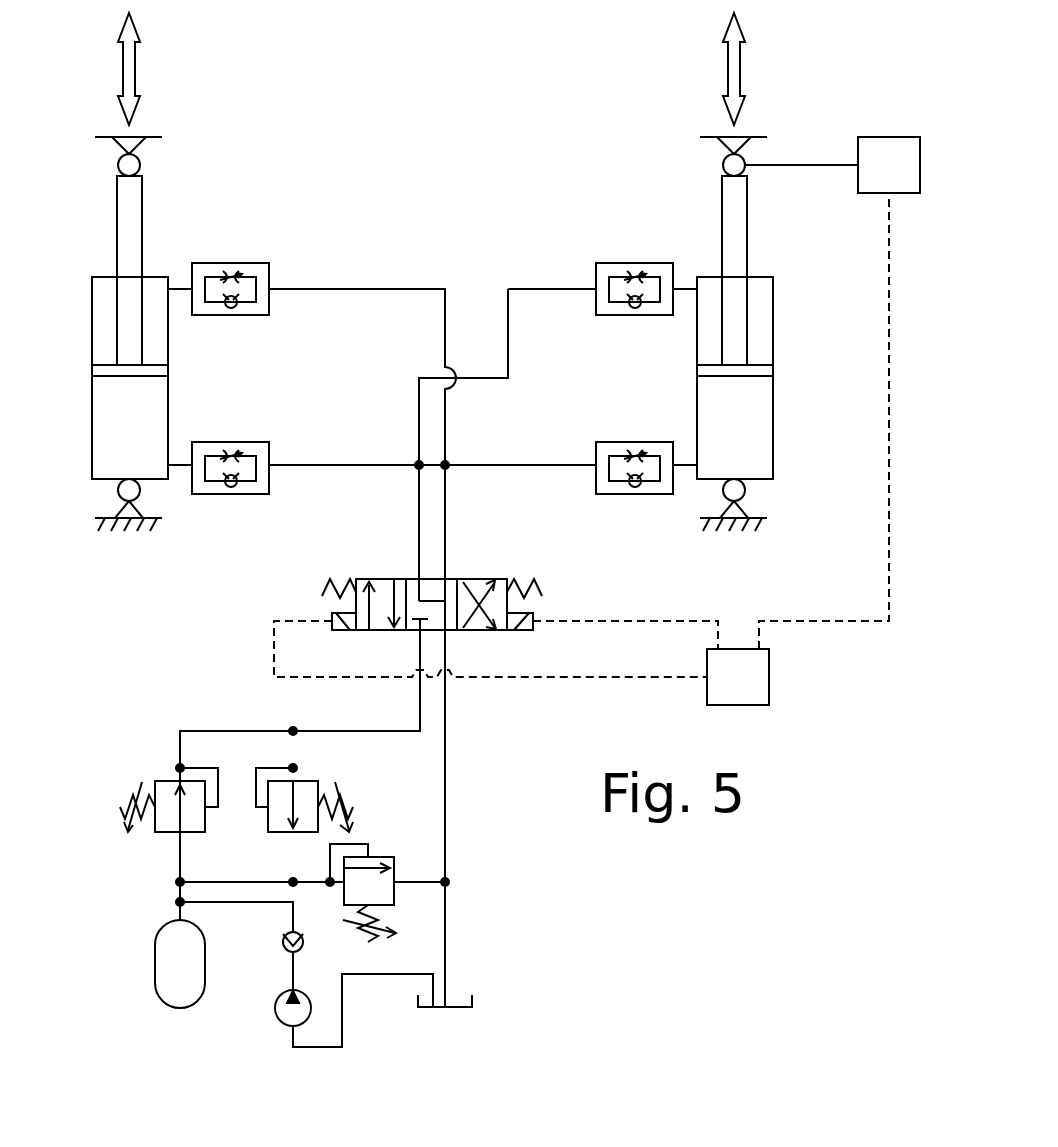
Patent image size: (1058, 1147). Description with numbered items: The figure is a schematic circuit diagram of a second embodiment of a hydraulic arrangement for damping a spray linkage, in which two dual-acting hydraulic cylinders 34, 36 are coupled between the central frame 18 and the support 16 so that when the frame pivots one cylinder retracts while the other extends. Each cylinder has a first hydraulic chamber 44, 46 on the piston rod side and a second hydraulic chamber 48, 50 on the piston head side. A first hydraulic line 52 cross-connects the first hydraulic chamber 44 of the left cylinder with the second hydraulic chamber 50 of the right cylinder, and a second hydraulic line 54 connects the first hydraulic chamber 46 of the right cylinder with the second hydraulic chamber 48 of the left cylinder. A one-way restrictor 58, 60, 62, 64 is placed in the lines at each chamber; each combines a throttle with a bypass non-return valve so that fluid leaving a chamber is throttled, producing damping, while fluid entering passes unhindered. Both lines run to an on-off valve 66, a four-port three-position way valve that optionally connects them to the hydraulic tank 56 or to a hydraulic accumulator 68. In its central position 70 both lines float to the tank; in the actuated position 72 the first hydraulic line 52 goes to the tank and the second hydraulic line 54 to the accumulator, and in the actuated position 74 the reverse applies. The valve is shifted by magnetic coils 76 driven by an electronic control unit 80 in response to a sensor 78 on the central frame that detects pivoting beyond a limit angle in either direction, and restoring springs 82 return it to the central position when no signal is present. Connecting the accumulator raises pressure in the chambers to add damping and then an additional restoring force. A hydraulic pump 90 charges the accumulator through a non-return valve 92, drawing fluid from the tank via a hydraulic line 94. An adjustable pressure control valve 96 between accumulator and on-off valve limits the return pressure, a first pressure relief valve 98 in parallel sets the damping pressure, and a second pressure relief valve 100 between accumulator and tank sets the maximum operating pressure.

The support 16 is at (123, 528).
The central frame 18 is at (152, 137).
The hydraulic cylinder 34 is at (168, 395).
The hydraulic cylinder 36 is at (773, 398).
The first hydraulic chamber 44 is at (100, 300).
The first hydraulic chamber 46 is at (770, 300).
The second hydraulic chamber 48 is at (110, 437).
The second hydraulic chamber 50 is at (723, 450).
The first hydraulic line 52 is at (385, 289).
The second hydraulic line 54 is at (550, 289).
The hydraulic tank 56 is at (458, 1011).
The one-way restrictor 58 is at (230, 263).
The one-way restrictor 60 is at (628, 263).
The one-way restrictor 62 is at (250, 442).
The one-way restrictor 64 is at (612, 494).
The on-off valve 66 is at (426, 574).
The hydraulic accumulator 68 is at (152, 968).
The central position 70 is at (415, 572).
The actuated position 72 is at (380, 632).
The actuated position 74 is at (478, 632).
The magnetic coils 76 is at (331, 621).
The sensor 78 is at (833, 165).
The electronic control unit 80 is at (738, 677).
The restoring springs 82 is at (335, 578).
The hydraulic pump 90 is at (280, 1022).
The non-return valve 92 is at (285, 948).
The hydraulic line 94 is at (373, 975).
The pressure control valve 96 is at (165, 832).
The first adjustable pressure relief valve 98 is at (302, 791).
The second pressure relief valve 100 is at (375, 862).